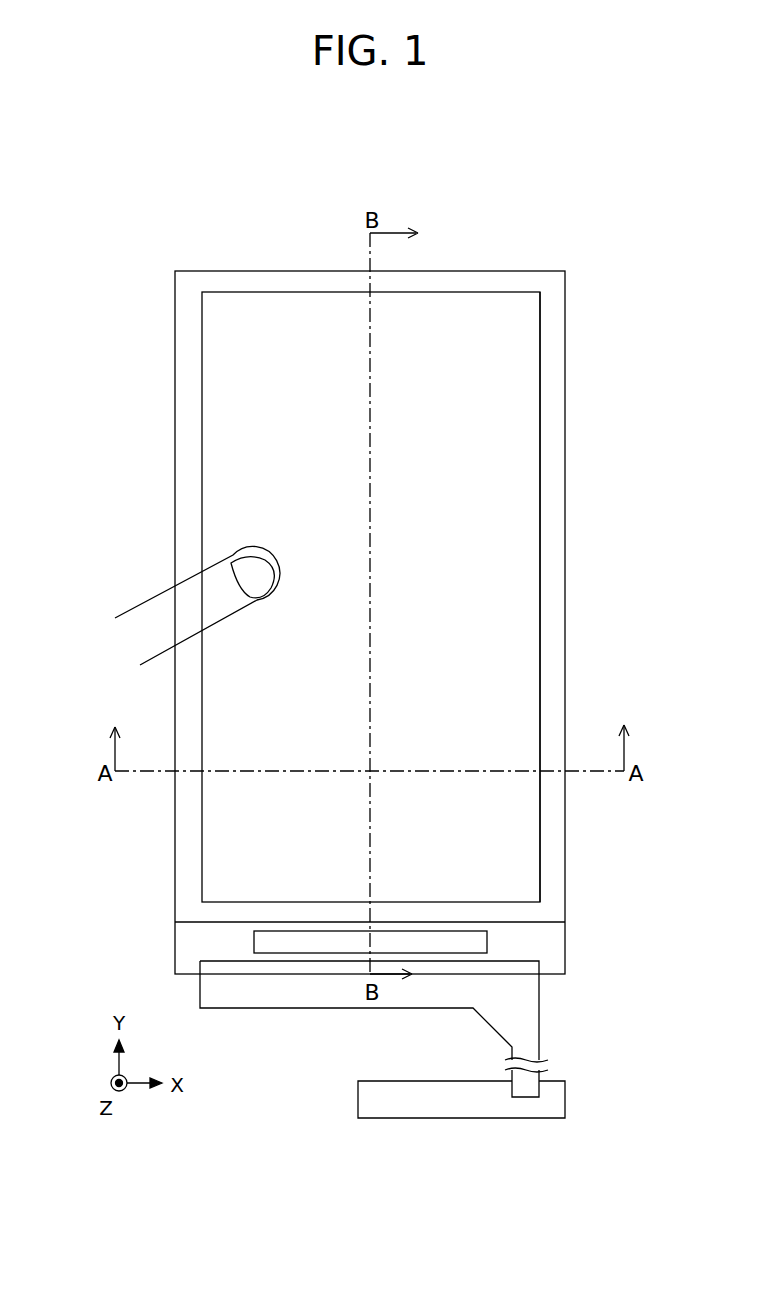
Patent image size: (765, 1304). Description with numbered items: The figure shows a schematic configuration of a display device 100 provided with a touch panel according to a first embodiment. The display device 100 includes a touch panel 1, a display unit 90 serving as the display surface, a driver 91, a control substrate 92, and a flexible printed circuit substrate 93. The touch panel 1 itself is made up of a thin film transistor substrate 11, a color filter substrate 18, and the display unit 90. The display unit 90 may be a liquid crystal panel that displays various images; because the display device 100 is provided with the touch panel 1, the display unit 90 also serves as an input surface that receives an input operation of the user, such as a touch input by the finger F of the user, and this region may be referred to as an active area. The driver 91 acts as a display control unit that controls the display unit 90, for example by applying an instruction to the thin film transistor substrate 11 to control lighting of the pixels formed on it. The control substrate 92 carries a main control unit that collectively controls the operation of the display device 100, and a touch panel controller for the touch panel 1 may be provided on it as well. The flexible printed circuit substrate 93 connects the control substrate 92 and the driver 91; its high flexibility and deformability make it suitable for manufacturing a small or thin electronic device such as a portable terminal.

The display device 100 is at (575, 206).
The touch panel 1 is at (493, 258).
The color filter substrate 18 is at (555, 417).
The display unit 90 is at (540, 548).
The thin film transistor substrate 11 is at (557, 947).
The driver 91 is at (313, 940).
The flexible printed circuit substrate 93 is at (528, 1010).
The control substrate 92 is at (557, 1102).
The finger F is at (142, 602).